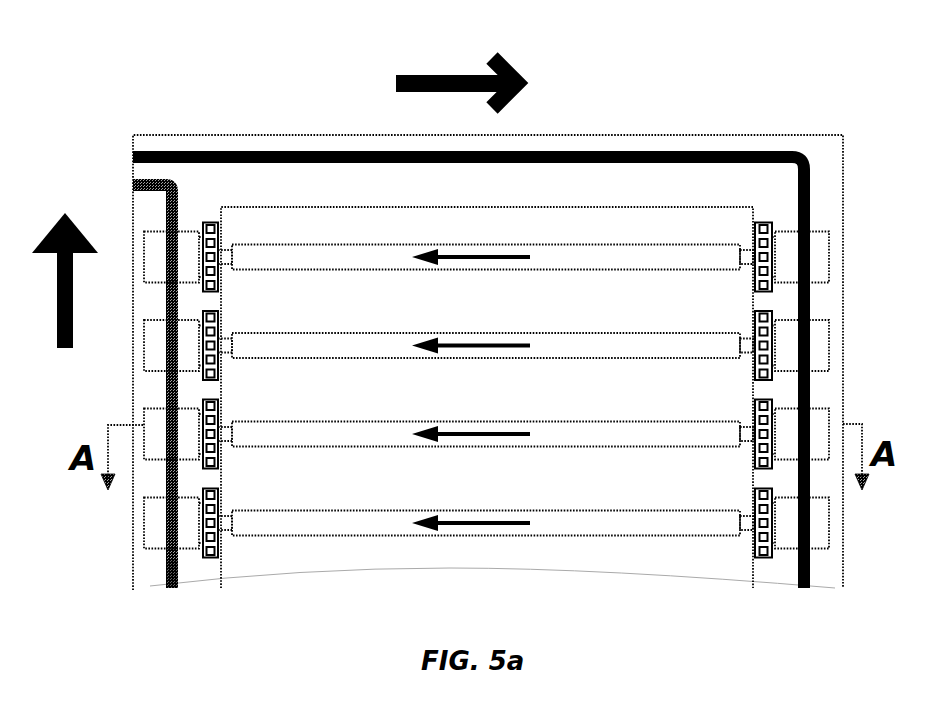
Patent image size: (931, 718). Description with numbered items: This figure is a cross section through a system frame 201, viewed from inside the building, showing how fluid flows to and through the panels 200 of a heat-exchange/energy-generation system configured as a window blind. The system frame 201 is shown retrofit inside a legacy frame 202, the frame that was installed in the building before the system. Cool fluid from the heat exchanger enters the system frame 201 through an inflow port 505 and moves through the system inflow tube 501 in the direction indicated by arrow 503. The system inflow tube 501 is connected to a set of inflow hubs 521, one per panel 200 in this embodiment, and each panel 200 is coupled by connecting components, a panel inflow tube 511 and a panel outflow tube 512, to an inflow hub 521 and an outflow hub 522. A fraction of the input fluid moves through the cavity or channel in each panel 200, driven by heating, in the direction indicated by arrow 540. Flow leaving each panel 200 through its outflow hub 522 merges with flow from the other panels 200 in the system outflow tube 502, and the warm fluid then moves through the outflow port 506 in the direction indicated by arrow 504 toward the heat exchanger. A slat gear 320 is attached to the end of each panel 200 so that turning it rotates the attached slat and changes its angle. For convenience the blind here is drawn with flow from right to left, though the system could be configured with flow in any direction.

The panel 200 is at (628, 422).
The system frame 201 is at (705, 135).
The legacy frame 202 is at (330, 225).
The slat gear 320 is at (205, 402).
The system inflow tube 501 is at (598, 152).
The system outflow tube 502 is at (172, 565).
The arrow indicating direction of inflow 503 is at (428, 75).
The arrow indicating direction of outflow 504 is at (67, 347).
The inflow port 505 is at (133, 153).
The outflow port 506 is at (133, 182).
The panel inflow tube 511 is at (752, 512).
The panel outflow tube 512 is at (222, 515).
The inflow hub 521 is at (829, 524).
The outflow hub 522 is at (144, 524).
The arrow indicating direction of flow through panel 540 is at (450, 523).